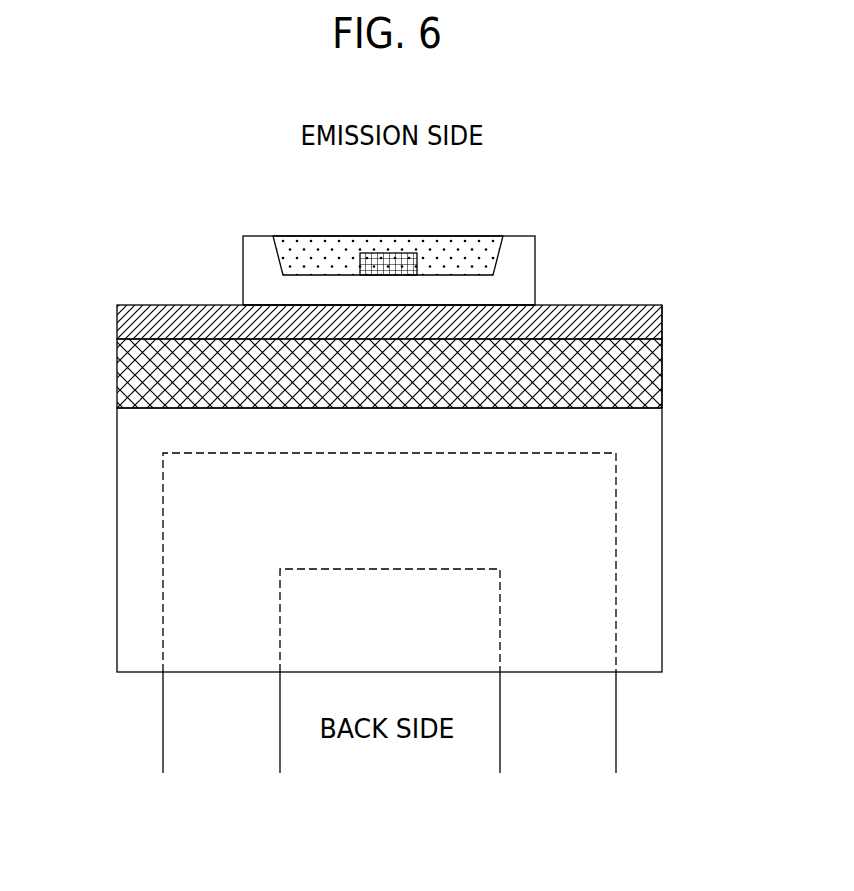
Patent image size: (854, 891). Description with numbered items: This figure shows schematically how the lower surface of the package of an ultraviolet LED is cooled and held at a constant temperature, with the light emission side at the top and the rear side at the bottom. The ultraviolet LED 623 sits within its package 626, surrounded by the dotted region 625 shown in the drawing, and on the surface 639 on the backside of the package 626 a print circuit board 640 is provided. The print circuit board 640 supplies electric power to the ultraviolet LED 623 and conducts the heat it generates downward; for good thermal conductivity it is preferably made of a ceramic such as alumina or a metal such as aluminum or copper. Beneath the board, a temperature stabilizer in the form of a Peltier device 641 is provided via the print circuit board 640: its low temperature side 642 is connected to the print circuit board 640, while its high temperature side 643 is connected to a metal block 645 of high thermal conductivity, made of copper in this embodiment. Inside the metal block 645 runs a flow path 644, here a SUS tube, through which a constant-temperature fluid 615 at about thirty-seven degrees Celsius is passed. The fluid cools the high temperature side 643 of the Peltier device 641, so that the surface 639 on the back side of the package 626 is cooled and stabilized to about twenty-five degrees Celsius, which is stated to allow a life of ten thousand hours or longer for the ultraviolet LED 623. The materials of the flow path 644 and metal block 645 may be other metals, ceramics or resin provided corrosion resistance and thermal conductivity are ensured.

The constant-temperature fluid 615 is at (389, 562).
The ultraviolet LED 623 is at (387, 257).
The sealing member 625 is at (486, 242).
The package 626 is at (256, 242).
The surface on the backside of the package 639 is at (507, 303).
The print circuit board 640 is at (125, 321).
The temperature stabilizer (Peltier device) 641 is at (125, 373).
The low temperature side 642 is at (645, 323).
The high temperature side 643 is at (641, 400).
The flow path 644 is at (163, 748).
The metal block 645 is at (130, 446).